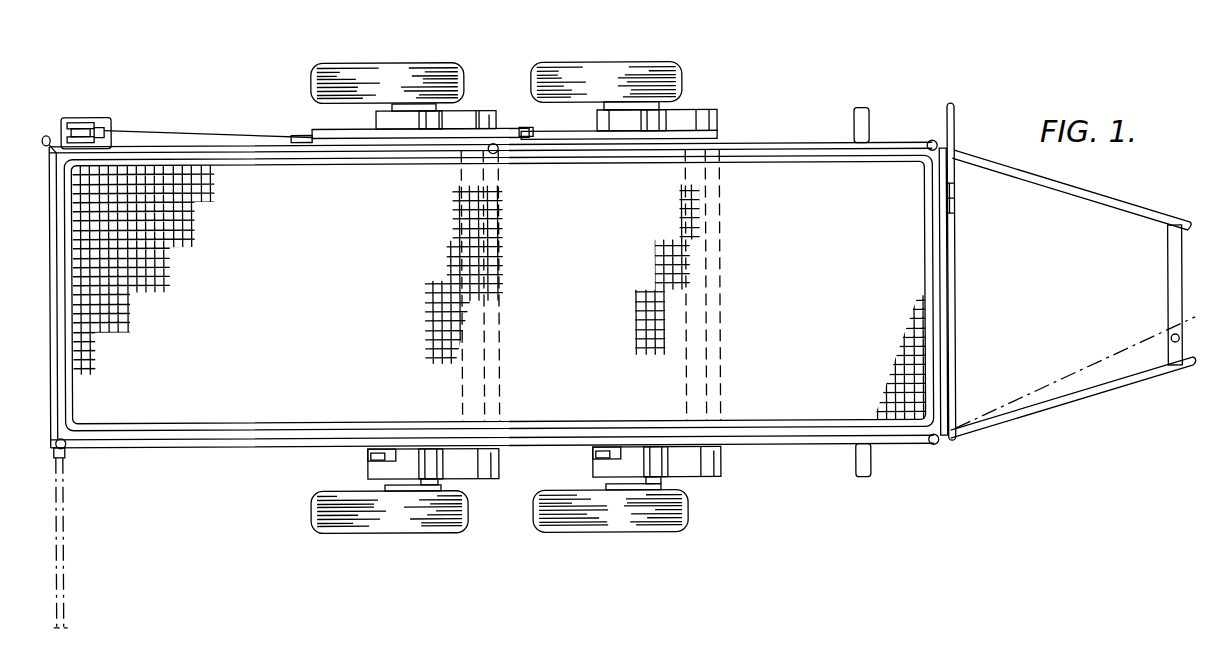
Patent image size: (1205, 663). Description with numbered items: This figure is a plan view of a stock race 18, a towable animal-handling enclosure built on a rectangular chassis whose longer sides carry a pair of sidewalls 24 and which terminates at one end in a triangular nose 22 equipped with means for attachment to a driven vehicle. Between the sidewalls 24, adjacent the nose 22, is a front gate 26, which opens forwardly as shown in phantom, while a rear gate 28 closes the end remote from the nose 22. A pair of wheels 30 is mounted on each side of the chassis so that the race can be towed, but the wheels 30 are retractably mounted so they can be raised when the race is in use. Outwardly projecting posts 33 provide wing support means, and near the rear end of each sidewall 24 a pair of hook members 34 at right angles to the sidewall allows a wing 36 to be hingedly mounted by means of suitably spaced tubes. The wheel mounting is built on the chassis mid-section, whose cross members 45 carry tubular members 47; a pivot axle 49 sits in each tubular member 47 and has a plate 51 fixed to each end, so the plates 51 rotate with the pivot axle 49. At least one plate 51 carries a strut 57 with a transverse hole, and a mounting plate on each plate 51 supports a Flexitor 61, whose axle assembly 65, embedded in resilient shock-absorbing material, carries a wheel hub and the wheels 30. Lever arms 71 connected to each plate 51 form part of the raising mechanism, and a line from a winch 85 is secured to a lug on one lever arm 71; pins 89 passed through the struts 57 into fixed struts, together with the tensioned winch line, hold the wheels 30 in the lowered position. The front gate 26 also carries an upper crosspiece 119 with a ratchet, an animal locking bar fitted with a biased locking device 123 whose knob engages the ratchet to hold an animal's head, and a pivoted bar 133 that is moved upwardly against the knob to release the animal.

The stock race 18 is at (173, 126).
The triangular nose 22 is at (1110, 200).
The sidewall 24 is at (222, 147).
The front gate 26 is at (952, 272).
The rear gate 28 is at (58, 390).
The wheel 30 is at (320, 76).
The outwardly projecting post 33 is at (862, 107).
The hook member 34 is at (64, 453).
The wing 36 is at (58, 512).
The cross member 45 is at (460, 377).
The tubular member 47 is at (503, 179).
The pivot axle 49 is at (488, 300).
The plate 51 is at (462, 120).
The strut 57 is at (368, 451).
The Flexitor 61 is at (655, 110).
The axle assembly 65 is at (400, 103).
The lever arm 71 is at (488, 130).
The winch 85 is at (90, 120).
The pin 89 is at (375, 463).
The upper crosspiece 119 is at (950, 311).
The biased locking device 123 is at (957, 218).
The bar 133 is at (953, 104).